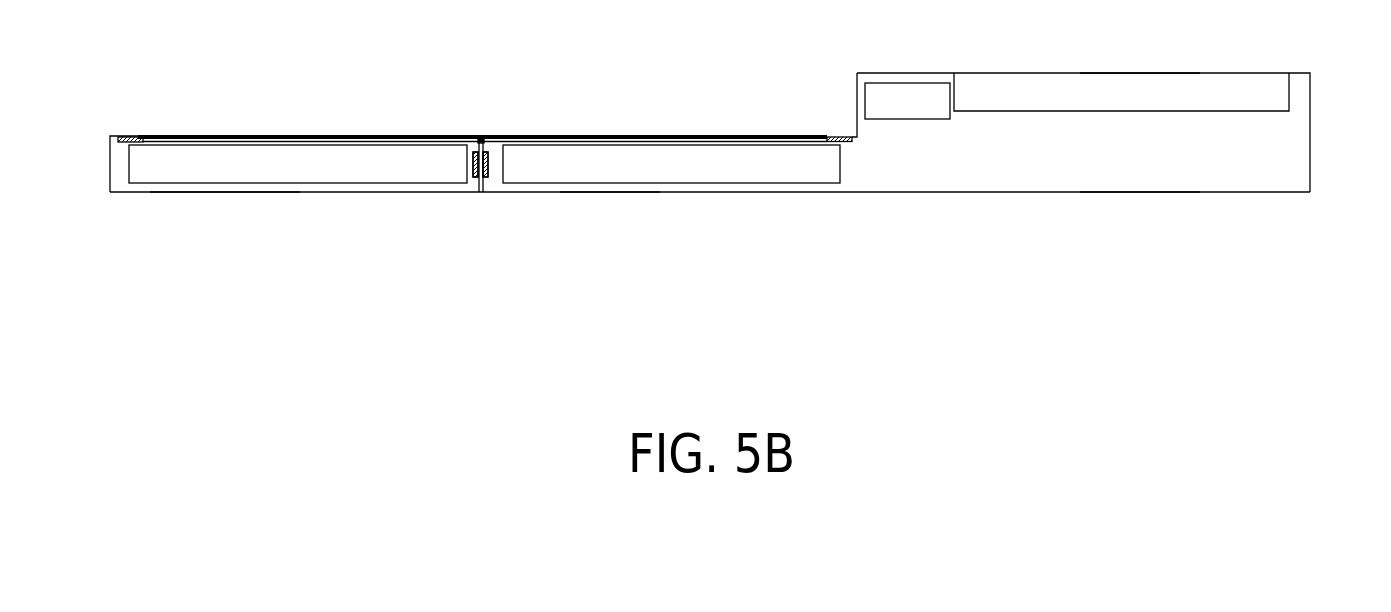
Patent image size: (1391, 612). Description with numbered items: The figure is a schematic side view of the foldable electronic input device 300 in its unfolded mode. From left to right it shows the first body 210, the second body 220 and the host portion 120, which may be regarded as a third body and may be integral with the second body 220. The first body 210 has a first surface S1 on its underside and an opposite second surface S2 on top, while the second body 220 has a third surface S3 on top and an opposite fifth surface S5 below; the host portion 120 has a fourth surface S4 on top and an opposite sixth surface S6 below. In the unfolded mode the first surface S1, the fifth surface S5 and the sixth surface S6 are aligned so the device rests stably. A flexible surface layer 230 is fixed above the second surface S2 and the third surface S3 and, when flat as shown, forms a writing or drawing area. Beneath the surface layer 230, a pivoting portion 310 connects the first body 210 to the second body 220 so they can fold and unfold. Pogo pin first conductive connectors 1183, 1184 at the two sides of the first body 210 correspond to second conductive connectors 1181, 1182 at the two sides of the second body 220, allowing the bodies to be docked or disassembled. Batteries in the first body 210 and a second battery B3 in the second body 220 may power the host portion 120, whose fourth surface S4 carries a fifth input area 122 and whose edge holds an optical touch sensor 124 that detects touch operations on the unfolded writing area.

The foldable electronic input device 300 is at (1276, 28).
The host portion 120 is at (1310, 137).
The fifth input area 122 is at (1012, 95).
The optical touch sensor 124 is at (902, 93).
The first body 210 is at (120, 165).
The second body 220 is at (795, 188).
The surface layer 230 is at (317, 134).
The pivoting portion 310 is at (481, 138).
The second conductive connector 1181 is at (837, 135).
The second conductive connector 1182 is at (489, 163).
The first conductive connector 1183 is at (475, 163).
The first conductive connector 1184 is at (132, 135).
The first surface S1 is at (222, 204).
The second surface S2 is at (221, 122).
The third surface S3 is at (614, 122).
The fourth surface S4 is at (1146, 60).
The fifth surface S5 is at (613, 204).
The sixth surface S6 is at (1144, 204).
The second battery B3 is at (708, 168).